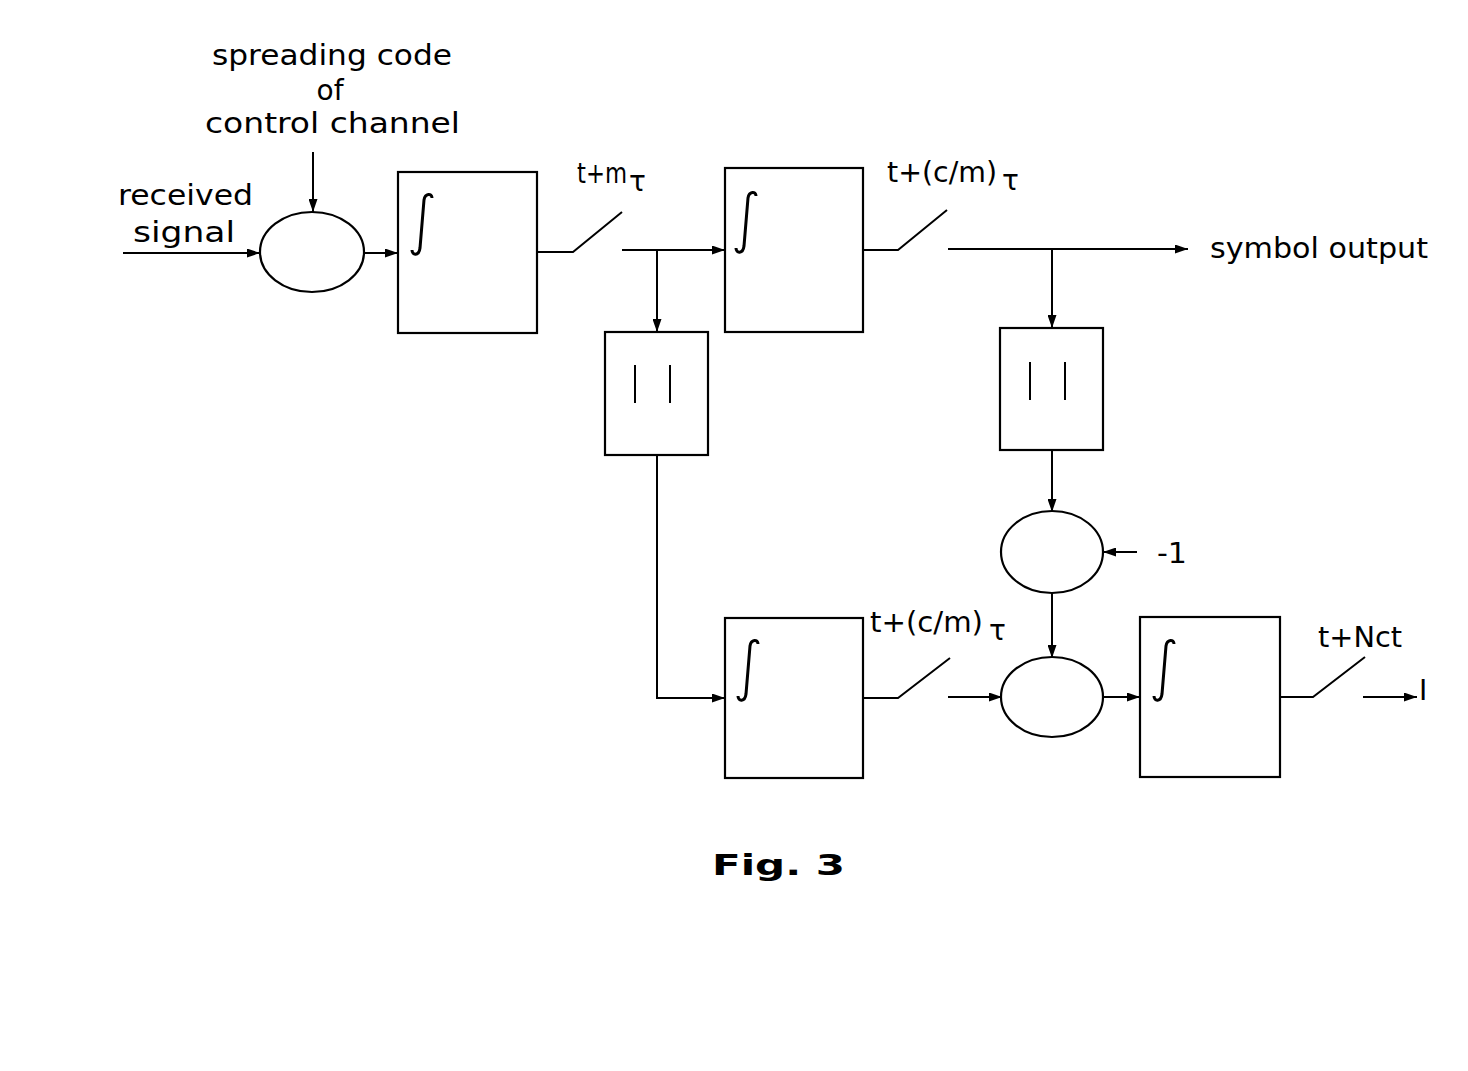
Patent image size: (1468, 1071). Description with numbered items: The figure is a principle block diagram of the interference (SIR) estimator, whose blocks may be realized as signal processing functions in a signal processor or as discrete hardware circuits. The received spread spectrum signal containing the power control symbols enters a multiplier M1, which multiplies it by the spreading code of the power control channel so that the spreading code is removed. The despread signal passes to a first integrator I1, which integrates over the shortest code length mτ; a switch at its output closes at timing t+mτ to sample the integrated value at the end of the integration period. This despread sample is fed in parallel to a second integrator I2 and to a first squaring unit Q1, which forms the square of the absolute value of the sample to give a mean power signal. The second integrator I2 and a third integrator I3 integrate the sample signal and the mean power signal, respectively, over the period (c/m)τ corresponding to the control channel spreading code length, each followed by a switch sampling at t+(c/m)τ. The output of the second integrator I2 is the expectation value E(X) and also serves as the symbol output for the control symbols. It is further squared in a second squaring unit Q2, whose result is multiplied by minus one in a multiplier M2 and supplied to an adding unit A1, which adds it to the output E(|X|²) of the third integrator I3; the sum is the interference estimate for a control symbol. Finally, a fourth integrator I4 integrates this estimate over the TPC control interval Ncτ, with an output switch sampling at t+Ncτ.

The multiplier M1 is at (269, 291).
The first integrator I1 is at (467, 252).
The second integrator I2 is at (794, 250).
The first squaring unit Q1 is at (656, 389).
The second squaring unit Q2 is at (1051, 384).
The multiplier M2 is at (1000, 546).
The third integrator I3 is at (794, 698).
The adding unit A1 is at (1035, 734).
The fourth integrator I4 is at (1210, 697).